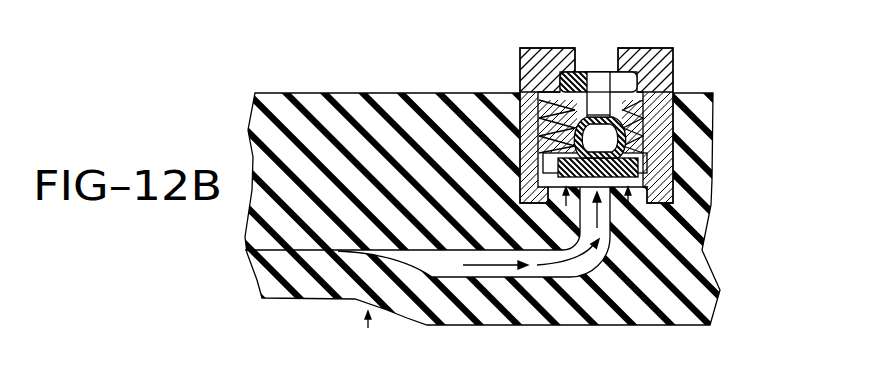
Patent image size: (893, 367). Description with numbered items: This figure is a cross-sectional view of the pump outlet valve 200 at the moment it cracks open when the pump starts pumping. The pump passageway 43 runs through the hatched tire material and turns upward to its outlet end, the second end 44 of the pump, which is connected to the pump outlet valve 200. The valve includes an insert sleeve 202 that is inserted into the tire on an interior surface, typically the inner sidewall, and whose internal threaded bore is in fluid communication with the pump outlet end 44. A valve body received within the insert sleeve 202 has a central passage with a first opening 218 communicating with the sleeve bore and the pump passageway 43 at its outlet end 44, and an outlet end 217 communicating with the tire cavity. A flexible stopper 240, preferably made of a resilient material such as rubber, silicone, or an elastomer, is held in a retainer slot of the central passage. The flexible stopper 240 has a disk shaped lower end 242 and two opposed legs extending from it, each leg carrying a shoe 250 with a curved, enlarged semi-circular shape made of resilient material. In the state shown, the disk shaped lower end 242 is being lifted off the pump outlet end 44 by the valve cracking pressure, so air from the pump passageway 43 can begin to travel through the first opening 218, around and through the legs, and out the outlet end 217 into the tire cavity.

The pump passageway 43 is at (445, 262).
The second end of the pump 44 is at (610, 207).
The pump outlet valve 200 is at (663, 35).
The insert sleeve 202 is at (680, 117).
The outlet end of the central passage 217 is at (613, 68).
The first opening of the central passage 218 is at (560, 150).
The flexible stopper 240 is at (641, 138).
The disk shaped lower end 242 is at (638, 167).
The shoe 250 is at (630, 82).